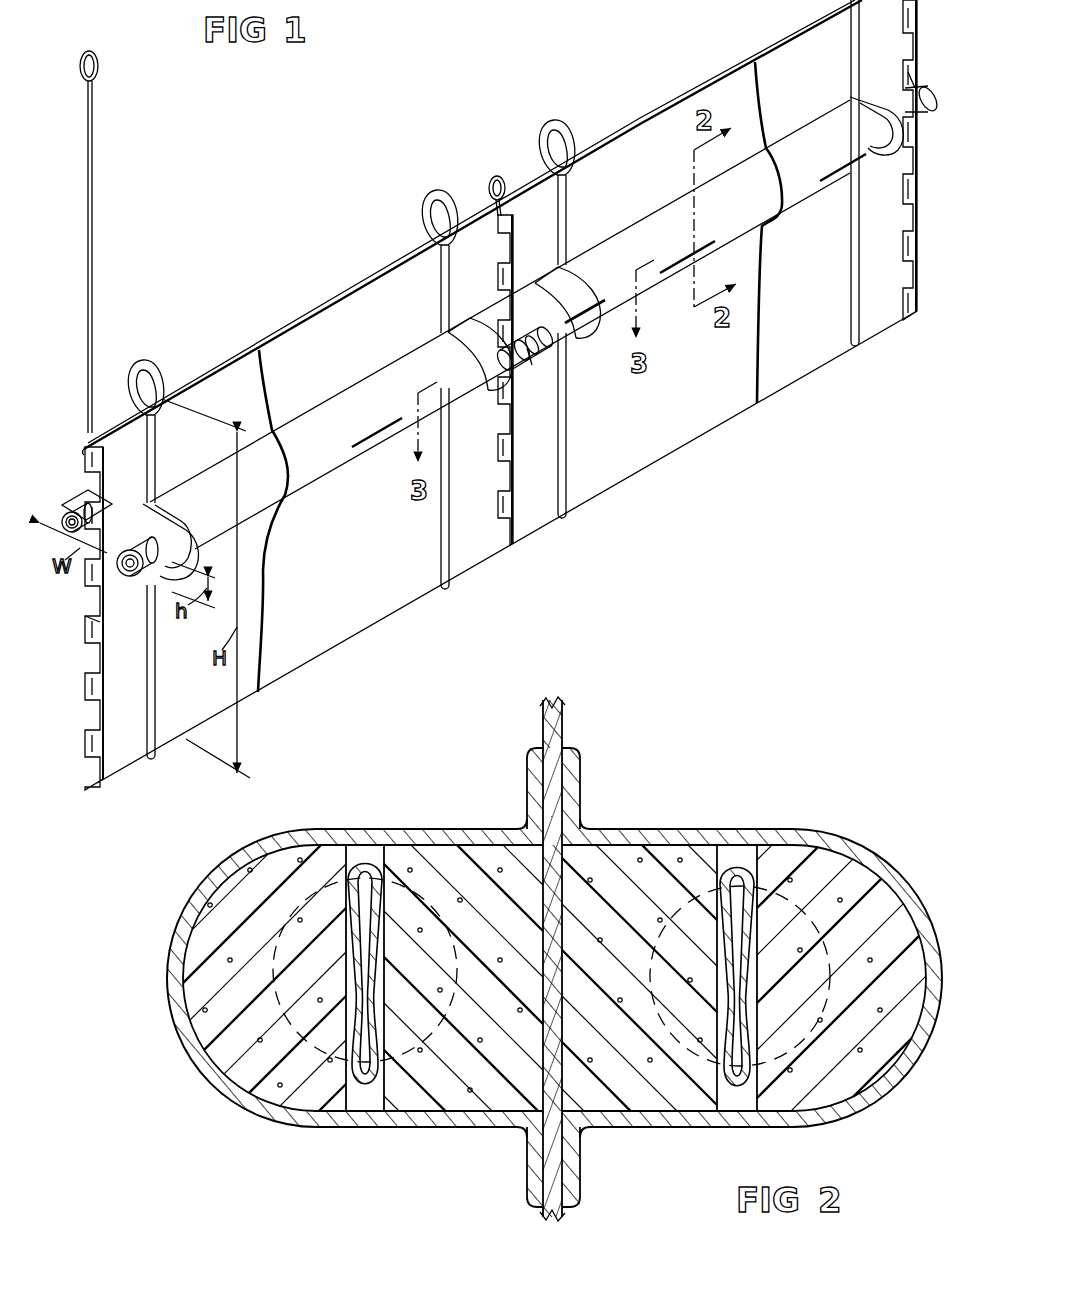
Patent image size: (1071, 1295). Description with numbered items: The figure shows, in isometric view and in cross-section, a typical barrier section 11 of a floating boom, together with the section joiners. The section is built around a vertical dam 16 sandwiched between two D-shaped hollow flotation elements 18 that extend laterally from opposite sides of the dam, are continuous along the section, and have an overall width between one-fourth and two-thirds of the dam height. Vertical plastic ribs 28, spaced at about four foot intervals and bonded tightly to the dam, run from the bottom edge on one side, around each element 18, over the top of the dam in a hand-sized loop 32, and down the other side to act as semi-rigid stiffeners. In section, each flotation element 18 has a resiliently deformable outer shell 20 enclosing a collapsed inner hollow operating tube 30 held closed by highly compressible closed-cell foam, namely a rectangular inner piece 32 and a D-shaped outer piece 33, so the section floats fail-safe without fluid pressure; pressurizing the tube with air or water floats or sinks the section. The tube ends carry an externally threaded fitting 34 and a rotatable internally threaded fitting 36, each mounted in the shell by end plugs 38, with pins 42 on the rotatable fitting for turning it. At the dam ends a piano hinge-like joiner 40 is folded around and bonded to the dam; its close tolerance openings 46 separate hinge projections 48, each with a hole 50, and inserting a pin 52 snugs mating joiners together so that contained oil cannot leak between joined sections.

In FIG. 1, the barrier section 11 is at (374, 268).
In FIG. 1, the vertical dam 16 is at (237, 360).
In FIG. 2, the vertical dam 16 is at (563, 715).
In FIG. 1, the flotation element 18 is at (82, 482).
In FIG. 2, the flotation element 18 is at (332, 826).
In FIG. 2, the outer shell 20 is at (470, 827).
In FIG. 1, the vertical plastic rib 28 is at (156, 690).
In FIG. 2, the inner hollow operating tube 30 is at (380, 857).
In FIG. 1, the hand-sized loop; rectangular inner foam piece 32 is at (134, 362).
In FIG. 2, the hand-sized loop; rectangular inner foam piece 32 is at (478, 1100).
In FIG. 2, the D-shaped outer piece 33 is at (268, 1090).
In FIG. 1, the externally threaded fitting 34 is at (70, 526).
In FIG. 1, the rotatable internally threaded fitting 36 is at (540, 343).
In FIG. 1, the end plug 38 is at (129, 540).
In FIG. 1, the joiner 40 is at (120, 757).
In FIG. 1, the pin 42 is at (527, 352).
In FIG. 1, the close tolerance opening 46 is at (97, 660).
In FIG. 1, the hinge projection 48 is at (88, 697).
In FIG. 1, the hole 50 is at (88, 618).
In FIG. 1, the pin 52 is at (87, 54).